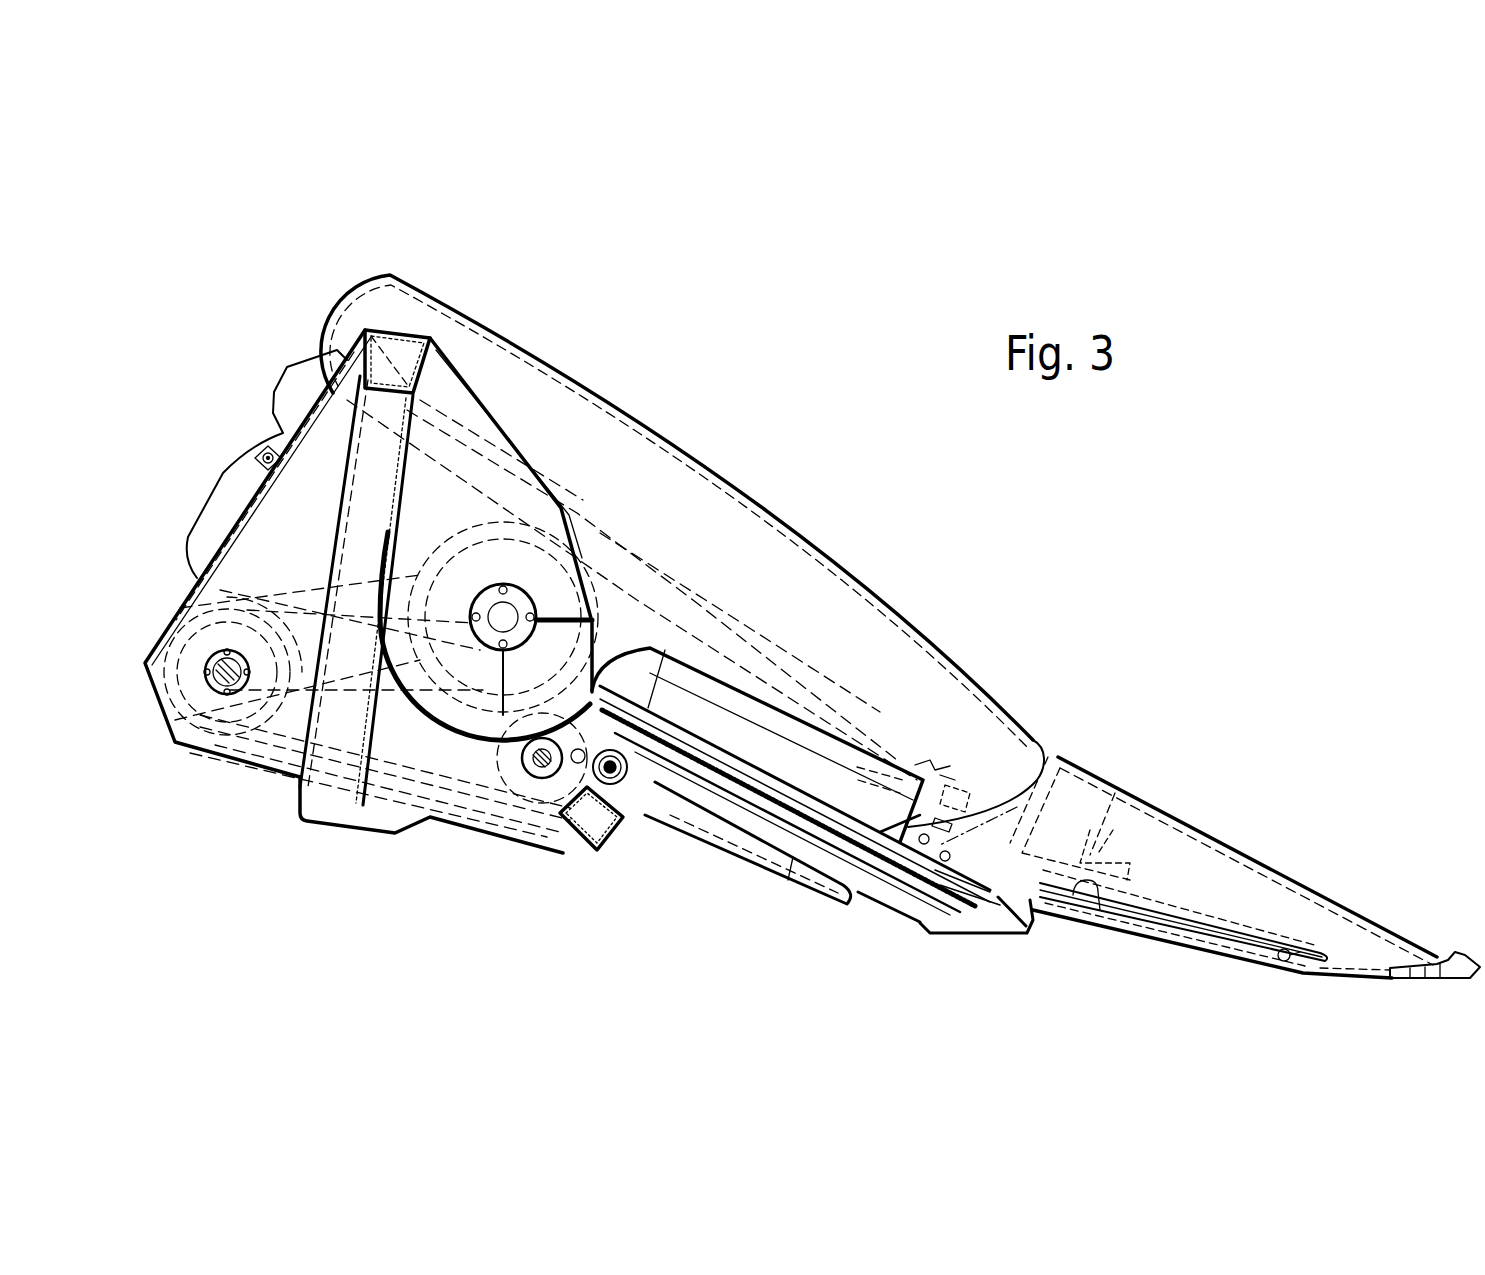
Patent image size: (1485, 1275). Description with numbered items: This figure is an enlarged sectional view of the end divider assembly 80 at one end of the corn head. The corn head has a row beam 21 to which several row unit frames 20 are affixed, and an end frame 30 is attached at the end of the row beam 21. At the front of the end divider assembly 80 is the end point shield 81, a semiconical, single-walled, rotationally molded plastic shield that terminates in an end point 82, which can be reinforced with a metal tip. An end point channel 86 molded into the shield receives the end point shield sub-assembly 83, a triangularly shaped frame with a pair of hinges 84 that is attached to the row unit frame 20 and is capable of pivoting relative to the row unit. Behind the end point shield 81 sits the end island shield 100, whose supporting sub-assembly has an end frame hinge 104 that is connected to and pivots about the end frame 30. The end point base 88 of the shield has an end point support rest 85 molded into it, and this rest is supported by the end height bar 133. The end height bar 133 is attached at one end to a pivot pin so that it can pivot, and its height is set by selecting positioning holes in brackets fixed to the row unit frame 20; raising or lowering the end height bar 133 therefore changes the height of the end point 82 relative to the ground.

The row unit frame 20 is at (883, 890).
The row beam 21 is at (598, 843).
The end frame 30 is at (293, 517).
The end divider assembly 80 is at (607, 398).
The end point shield 81 is at (1278, 870).
The end point 82 is at (1453, 985).
The end point shield sub-assembly 83 is at (1176, 932).
The hinges 84 is at (957, 830).
The end point support rest 85 is at (1113, 852).
The end point channel 86 is at (1244, 950).
The end point base 88 is at (1070, 783).
The end island shield 100 is at (883, 598).
The end frame hinge 104 is at (257, 452).
The end height bar 133 is at (1093, 880).